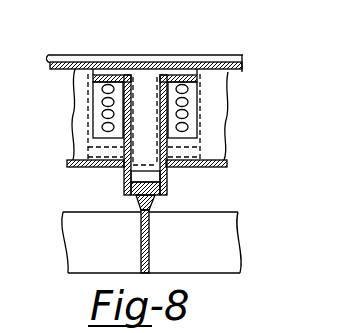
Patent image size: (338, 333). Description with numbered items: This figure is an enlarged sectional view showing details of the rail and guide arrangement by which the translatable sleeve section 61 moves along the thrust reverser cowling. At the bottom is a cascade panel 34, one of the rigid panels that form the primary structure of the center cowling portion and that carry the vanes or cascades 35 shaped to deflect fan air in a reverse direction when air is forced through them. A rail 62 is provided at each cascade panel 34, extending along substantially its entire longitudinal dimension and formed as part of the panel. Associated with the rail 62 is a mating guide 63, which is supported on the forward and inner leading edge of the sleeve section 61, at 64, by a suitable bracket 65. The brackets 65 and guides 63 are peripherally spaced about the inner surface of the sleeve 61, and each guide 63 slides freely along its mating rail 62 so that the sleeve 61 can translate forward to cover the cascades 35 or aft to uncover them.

The cascade panel 34 is at (226, 212).
The cascades 35 is at (226, 253).
The sleeve section 61 is at (220, 110).
The rail 62 is at (139, 214).
The guide 63 is at (124, 199).
The forward and inner leading edge of the sleeve section 64 is at (150, 68).
The bracket 65 is at (124, 178).